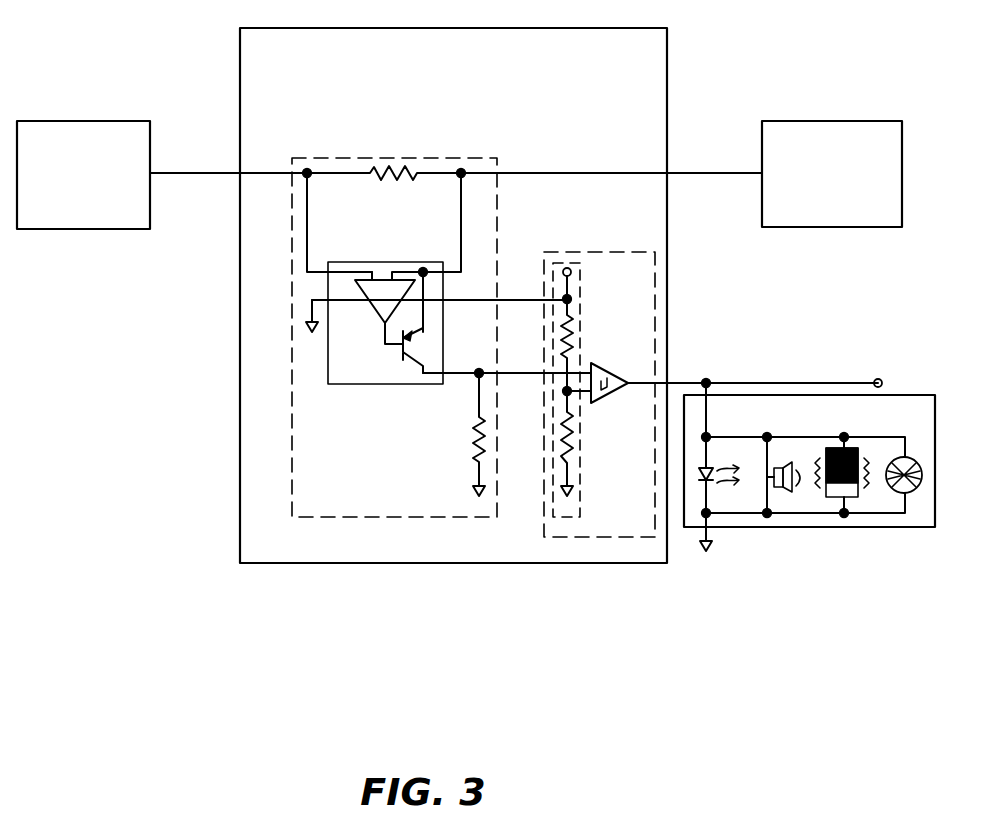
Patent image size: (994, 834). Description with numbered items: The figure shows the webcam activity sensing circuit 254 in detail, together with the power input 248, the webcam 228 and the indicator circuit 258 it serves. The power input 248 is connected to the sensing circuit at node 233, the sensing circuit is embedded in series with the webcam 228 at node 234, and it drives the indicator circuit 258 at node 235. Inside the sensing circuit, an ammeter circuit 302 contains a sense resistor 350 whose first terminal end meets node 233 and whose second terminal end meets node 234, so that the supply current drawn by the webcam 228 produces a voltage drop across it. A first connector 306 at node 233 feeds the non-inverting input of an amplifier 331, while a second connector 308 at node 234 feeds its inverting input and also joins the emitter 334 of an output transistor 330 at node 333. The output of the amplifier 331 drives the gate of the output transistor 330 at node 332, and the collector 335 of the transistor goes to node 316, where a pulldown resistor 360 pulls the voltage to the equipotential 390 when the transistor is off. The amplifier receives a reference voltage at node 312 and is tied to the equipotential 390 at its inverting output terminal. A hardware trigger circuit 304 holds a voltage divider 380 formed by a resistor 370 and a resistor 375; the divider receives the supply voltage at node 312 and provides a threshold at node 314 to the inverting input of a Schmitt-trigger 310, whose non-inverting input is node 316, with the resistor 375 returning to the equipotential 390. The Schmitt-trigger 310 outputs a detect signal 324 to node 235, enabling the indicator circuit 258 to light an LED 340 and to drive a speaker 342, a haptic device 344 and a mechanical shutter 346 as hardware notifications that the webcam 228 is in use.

The power input 248 is at (83, 175).
The node 233 is at (224, 172).
The webcam activity sensing circuit 254 is at (453, 295).
The webcam 228 is at (832, 174).
The node 234 is at (746, 172).
The ammeter circuit 302 is at (320, 155).
The resistor 350 is at (399, 166).
The first connector 306 is at (305, 206).
The second connector 308 is at (463, 212).
The output transistor 330 is at (410, 376).
The amplifier 331 is at (376, 276).
The node 333 is at (423, 266).
The emitter 334 is at (430, 296).
The collector 335 is at (425, 372).
The node 332 is at (385, 346).
The node 316 is at (478, 370).
The resistor 360 is at (474, 452).
The hardware trigger circuit 304 is at (590, 253).
The node 312 is at (506, 297).
The resistor 370 is at (576, 320).
The resistor 375 is at (566, 455).
The node 314 is at (566, 396).
The Schmitt-trigger 310 is at (612, 392).
The voltage divider 380 is at (580, 520).
The node 235 is at (706, 380).
The VCAM_DETECT signal 324 is at (880, 379).
The indicator circuit 258 is at (809, 462).
The light emitting diode 340 is at (720, 487).
The speaker 342 is at (790, 490).
The haptic device 344 is at (853, 497).
The mechanical shutter 346 is at (912, 492).
The equipotential 390 is at (306, 322).